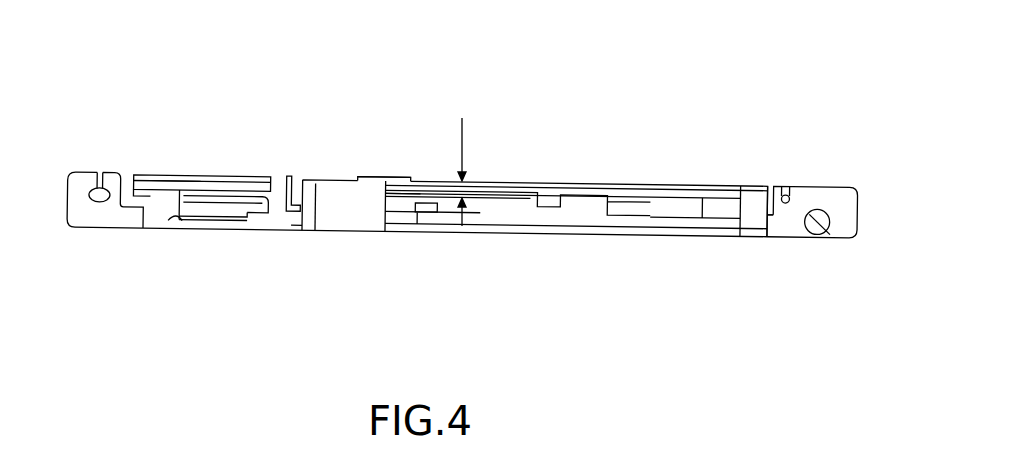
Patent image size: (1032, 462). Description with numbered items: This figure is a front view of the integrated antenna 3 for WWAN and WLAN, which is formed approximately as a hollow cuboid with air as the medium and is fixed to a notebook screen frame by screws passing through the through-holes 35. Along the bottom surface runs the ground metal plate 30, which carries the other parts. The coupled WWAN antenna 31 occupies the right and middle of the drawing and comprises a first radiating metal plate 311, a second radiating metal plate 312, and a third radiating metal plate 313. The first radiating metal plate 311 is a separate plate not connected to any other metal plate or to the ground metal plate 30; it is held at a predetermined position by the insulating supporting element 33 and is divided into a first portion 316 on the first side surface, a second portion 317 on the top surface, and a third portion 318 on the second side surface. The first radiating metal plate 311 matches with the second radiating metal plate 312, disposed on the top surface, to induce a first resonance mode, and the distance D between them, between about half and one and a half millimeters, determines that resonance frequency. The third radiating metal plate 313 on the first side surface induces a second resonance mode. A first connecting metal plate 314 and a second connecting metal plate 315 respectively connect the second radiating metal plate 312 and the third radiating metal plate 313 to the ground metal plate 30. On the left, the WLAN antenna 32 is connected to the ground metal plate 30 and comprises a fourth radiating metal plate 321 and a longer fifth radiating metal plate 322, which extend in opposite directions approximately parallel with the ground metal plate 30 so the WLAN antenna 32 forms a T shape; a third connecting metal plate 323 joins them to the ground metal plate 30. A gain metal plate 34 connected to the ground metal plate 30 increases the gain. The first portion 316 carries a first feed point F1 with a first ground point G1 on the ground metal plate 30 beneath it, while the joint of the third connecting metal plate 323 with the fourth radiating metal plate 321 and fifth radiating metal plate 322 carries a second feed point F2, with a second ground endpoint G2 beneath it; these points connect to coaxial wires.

The integrated antenna 3 is at (826, 103).
The ground metal plate 30 is at (496, 233).
The coupled WWAN antenna 31 is at (687, 168).
The first radiating metal plate 311 is at (336, 180).
The second radiating metal plate 312 is at (538, 183).
The third radiating metal plate 313 is at (582, 206).
The first connecting metal plate 314 is at (761, 223).
The second connecting metal plate 315 is at (418, 216).
The first portion 316 is at (311, 205).
The second portion 317 is at (344, 178).
The third portion 318 is at (398, 197).
The WLAN antenna 32 is at (198, 160).
The fourth radiating metal plate 321 is at (152, 215).
The fifth radiating metal plate 322 is at (257, 214).
The third connecting metal plate 323 is at (240, 223).
The supporting element 33 is at (352, 206).
The gain metal plate 34 is at (722, 209).
The through-holes 35 is at (828, 240).
The distance D is at (462, 158).
The first feed point F1 is at (295, 200).
The second feed point F2 is at (178, 212).
The first ground point G1 is at (293, 230).
The second ground endpoint G2 is at (176, 222).